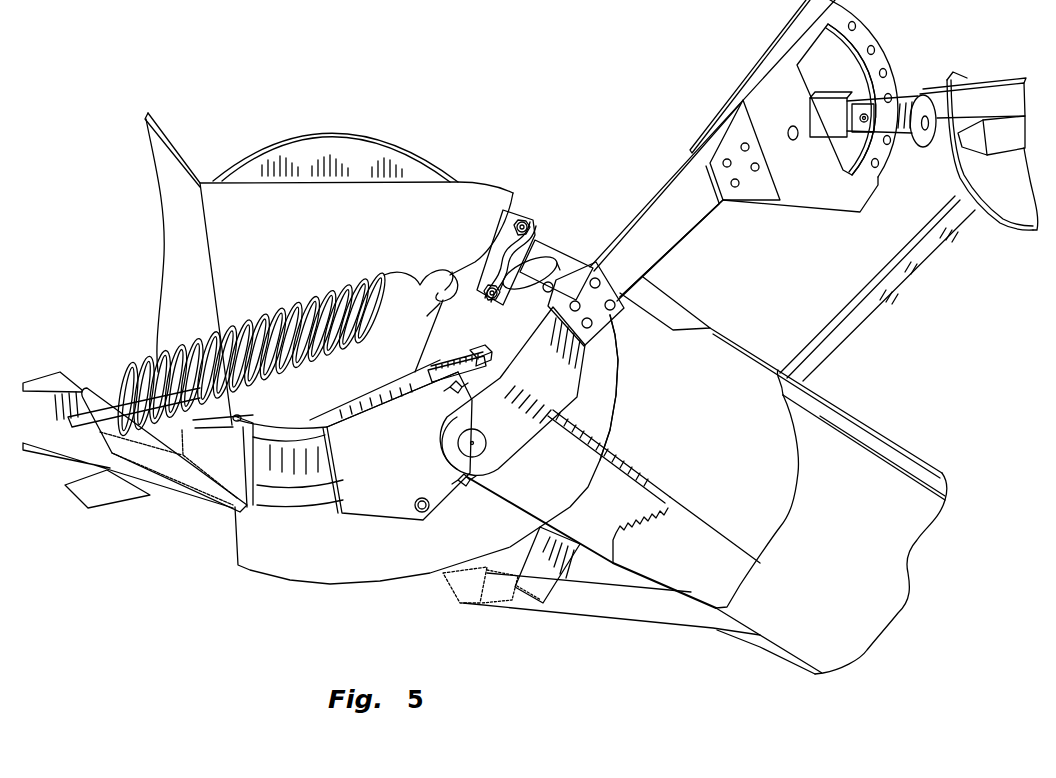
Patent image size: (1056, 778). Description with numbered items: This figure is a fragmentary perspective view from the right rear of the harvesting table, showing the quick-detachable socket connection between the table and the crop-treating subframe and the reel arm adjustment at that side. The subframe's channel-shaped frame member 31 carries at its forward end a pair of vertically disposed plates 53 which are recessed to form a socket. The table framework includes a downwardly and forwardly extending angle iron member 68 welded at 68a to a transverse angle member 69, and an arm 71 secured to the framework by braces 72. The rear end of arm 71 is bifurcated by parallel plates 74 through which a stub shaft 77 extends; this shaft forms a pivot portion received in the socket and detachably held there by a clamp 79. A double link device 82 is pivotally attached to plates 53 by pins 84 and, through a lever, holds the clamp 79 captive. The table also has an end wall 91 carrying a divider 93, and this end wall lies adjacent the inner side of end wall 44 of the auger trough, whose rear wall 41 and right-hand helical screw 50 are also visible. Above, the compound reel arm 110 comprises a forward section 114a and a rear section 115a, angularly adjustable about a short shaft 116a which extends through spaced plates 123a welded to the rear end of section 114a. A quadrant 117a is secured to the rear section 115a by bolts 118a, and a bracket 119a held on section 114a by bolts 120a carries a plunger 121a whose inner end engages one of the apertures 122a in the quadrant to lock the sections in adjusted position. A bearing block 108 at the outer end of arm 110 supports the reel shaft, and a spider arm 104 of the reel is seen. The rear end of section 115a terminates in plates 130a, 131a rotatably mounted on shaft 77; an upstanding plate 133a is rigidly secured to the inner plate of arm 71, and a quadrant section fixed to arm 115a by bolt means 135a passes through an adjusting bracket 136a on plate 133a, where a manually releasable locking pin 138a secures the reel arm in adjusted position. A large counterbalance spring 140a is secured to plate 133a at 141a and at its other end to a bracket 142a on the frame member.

The rear wall 41 is at (160, 128).
The right hand helical screw 50 is at (333, 136).
The end wall 44 is at (392, 258).
The counterbalance spring 140a is at (256, 322).
The spring attachment point 141a is at (455, 270).
The upstanding plate 133a is at (497, 237).
The adjusting bracket 136a is at (532, 222).
The locking pin 138a is at (552, 255).
The plate 131a is at (578, 256).
The compound arm 110 is at (667, 172).
The quadrant 117a is at (780, 46).
The rear arm section 115a is at (693, 232).
The bolts 118a is at (739, 204).
The short shaft 116a is at (793, 140).
The apertures 122a is at (855, 27).
The spaced plates 123a is at (838, 98).
The bolts 120a is at (861, 126).
The bracket 119a is at (889, 112).
The plunger 121a is at (920, 148).
The forward arm section 114a is at (994, 88).
The bearing block 108 is at (991, 155).
The spider arm 104 is at (877, 306).
The end wall 91 is at (753, 444).
The divider 93 is at (870, 553).
The parallel plates 74 is at (618, 452).
The arm 71 is at (690, 522).
The braces 72 is at (556, 610).
The transverse angle member 69 is at (440, 596).
The weld 68a is at (480, 606).
The angle iron member 68 is at (607, 618).
The stub shaft 77 is at (455, 448).
The bolt means 135a is at (593, 324).
The plate 130a is at (590, 374).
The plates 53 is at (371, 390).
The frame member 31 is at (274, 510).
The bracket 142a is at (88, 388).
The pins 84 is at (450, 394).
The clamp 79 is at (477, 346).
The double link device 82 is at (441, 362).